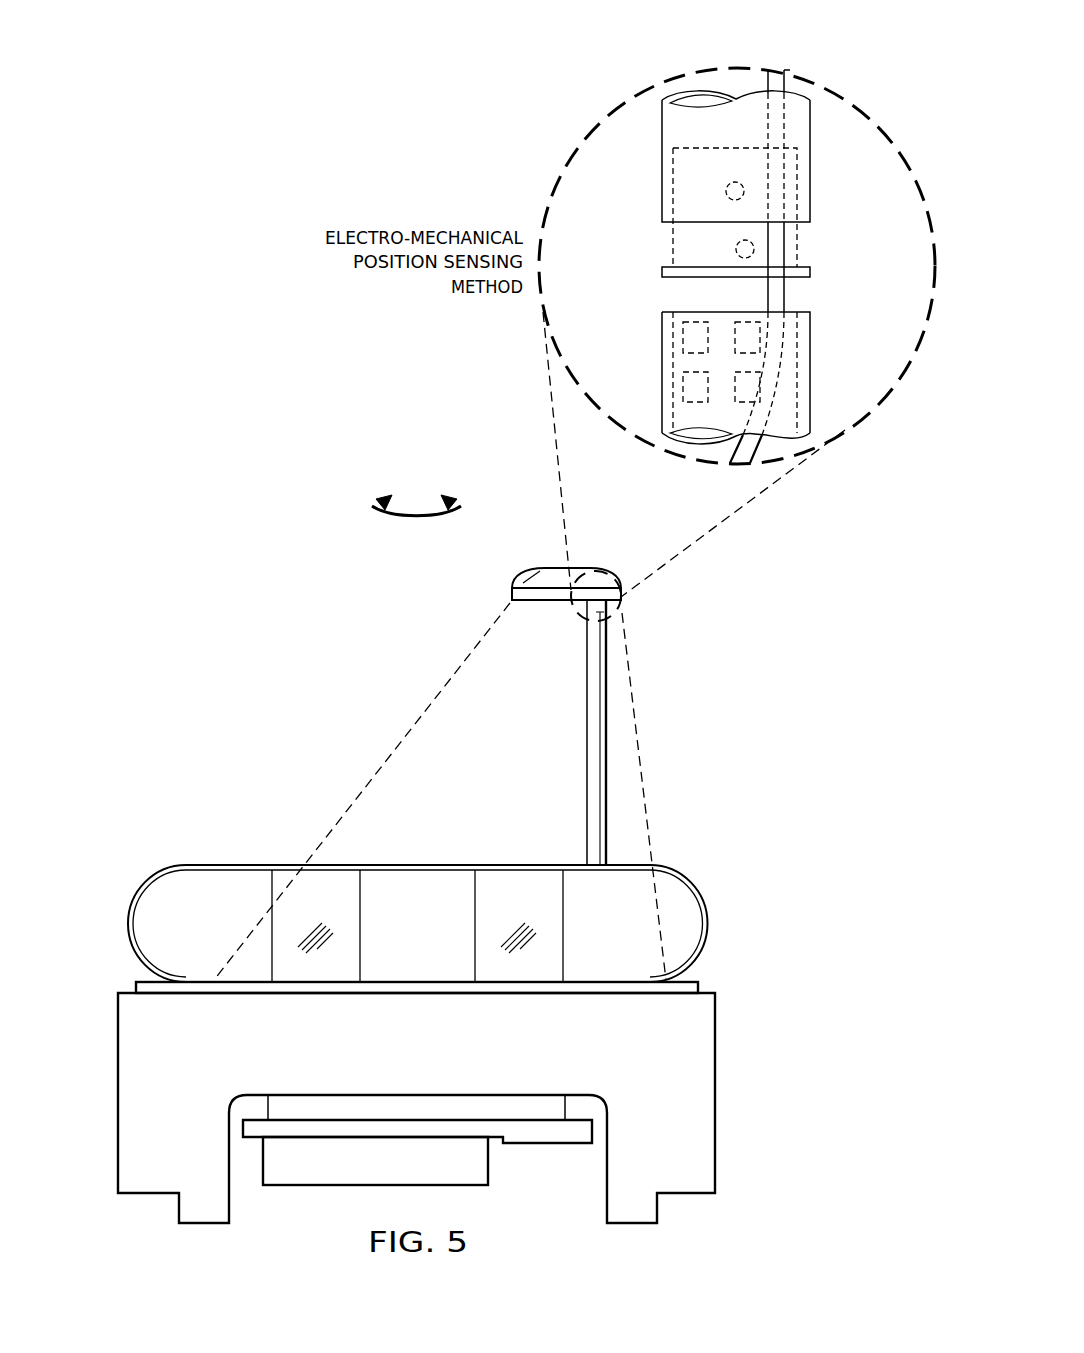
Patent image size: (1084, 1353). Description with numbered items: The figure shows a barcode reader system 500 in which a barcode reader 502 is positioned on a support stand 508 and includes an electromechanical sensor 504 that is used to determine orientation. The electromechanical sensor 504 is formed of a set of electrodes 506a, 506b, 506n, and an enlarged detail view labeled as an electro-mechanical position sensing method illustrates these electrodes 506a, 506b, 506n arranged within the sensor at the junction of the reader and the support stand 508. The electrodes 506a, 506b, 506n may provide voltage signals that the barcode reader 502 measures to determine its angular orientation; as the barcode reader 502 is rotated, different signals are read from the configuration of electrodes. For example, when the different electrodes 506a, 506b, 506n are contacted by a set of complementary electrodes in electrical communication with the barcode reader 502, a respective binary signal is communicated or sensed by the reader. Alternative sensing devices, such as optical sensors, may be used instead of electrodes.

The barcode reader system 500 is at (233, 191).
The barcode reader 502 is at (585, 568).
The electromechanical sensor 504 is at (830, 255).
The electrode 506a is at (736, 250).
The electrode 506b is at (760, 338).
The electrode 506n is at (760, 388).
The support stand 508 is at (578, 615).